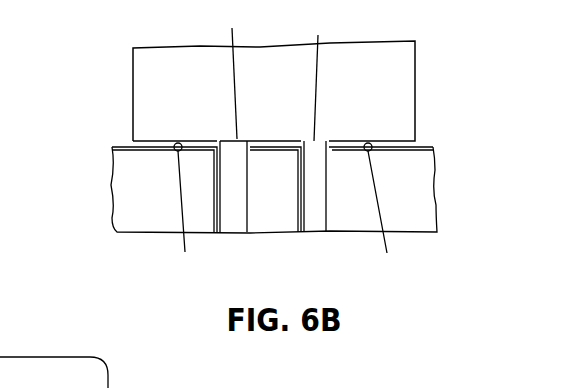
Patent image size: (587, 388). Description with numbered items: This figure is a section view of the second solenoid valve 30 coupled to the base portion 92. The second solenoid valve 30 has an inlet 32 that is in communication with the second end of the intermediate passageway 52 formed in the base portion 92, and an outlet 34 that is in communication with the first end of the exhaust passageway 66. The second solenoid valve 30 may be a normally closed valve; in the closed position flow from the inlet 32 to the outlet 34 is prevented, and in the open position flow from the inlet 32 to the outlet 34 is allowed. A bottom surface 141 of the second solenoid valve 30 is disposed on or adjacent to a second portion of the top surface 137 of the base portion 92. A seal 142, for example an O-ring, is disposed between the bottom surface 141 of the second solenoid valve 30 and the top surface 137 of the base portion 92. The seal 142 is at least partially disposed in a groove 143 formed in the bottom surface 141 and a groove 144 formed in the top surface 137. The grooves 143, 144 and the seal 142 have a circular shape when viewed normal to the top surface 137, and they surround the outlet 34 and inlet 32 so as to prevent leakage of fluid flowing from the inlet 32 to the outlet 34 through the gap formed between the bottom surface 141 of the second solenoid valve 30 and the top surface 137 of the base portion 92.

The second solenoid valve 30 is at (387, 68).
The inlet 32 is at (232, 71).
The outlet 34 is at (317, 78).
The intermediate passageway 52 is at (233, 222).
The exhaust passageway 66 is at (317, 222).
The base portion 92 is at (143, 215).
The top surface of the base portion 137 is at (122, 146).
The bottom surface of the second solenoid valve 141 is at (400, 148).
The seal 142 is at (177, 150).
The groove in the bottom surface of the second solenoid valve 143 is at (178, 143).
The groove in the top surface of the base portion 144 is at (285, 214).